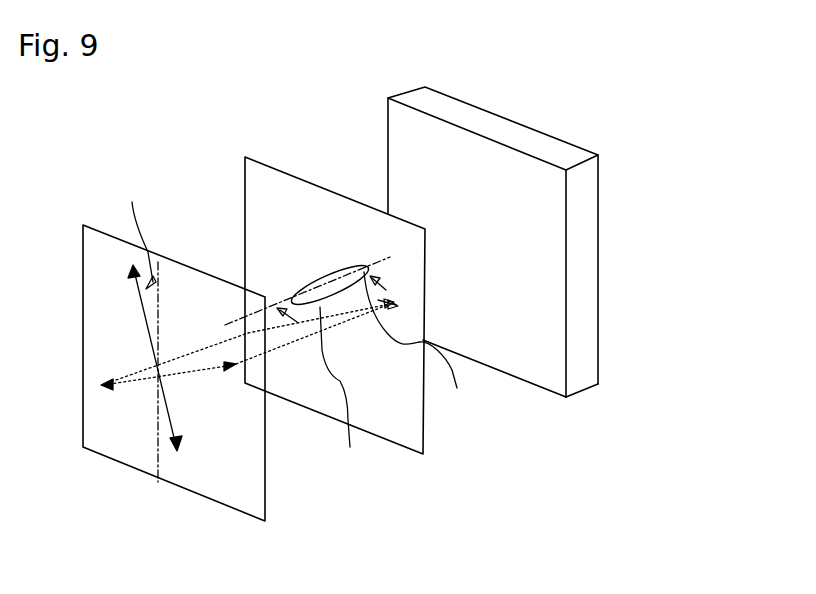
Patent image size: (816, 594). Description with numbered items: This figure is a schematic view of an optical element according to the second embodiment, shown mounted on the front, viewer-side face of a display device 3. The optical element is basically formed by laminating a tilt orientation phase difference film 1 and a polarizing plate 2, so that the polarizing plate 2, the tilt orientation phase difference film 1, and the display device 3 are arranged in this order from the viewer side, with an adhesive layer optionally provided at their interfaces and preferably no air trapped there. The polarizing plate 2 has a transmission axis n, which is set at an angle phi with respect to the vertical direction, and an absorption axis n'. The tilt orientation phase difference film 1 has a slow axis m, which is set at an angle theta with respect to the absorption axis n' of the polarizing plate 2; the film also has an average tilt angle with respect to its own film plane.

The tilt orientation phase difference film 1 is at (413, 410).
The polarizing plate 2 is at (243, 470).
The display device 3 is at (578, 362).
The slow axis m is at (416, 350).
The transmission axis n is at (142, 406).
The absorption axis n' is at (117, 392).